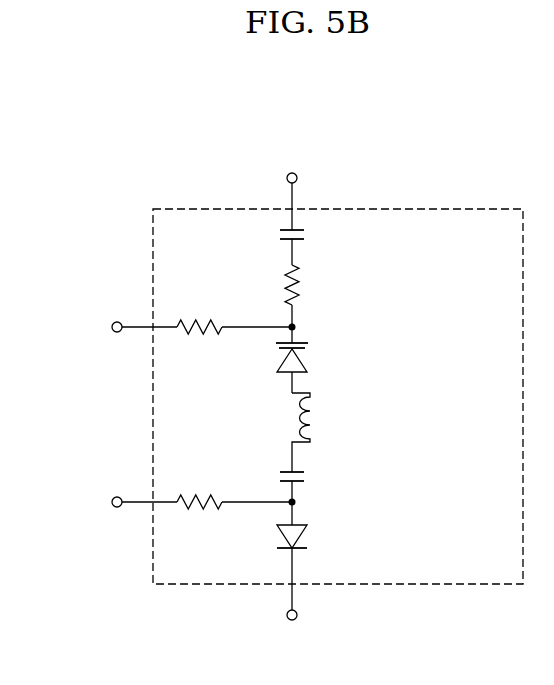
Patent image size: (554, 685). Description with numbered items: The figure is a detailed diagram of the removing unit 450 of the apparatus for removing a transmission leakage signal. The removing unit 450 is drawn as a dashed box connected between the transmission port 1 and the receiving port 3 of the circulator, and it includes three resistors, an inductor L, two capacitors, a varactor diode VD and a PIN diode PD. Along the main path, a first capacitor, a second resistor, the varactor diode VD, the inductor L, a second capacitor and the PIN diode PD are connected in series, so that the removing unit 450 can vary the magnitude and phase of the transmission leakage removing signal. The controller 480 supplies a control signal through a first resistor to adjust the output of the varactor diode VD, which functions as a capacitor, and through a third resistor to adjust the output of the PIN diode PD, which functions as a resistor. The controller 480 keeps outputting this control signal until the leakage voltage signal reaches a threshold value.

The removing unit 450 is at (370, 97).
The controller 480 is at (70, 400).
The transmission port 1 is at (290, 162).
The receiving port 3 is at (291, 631).